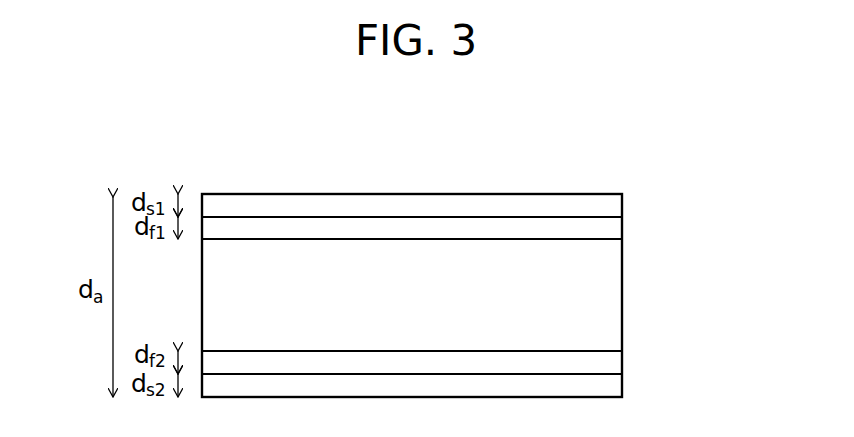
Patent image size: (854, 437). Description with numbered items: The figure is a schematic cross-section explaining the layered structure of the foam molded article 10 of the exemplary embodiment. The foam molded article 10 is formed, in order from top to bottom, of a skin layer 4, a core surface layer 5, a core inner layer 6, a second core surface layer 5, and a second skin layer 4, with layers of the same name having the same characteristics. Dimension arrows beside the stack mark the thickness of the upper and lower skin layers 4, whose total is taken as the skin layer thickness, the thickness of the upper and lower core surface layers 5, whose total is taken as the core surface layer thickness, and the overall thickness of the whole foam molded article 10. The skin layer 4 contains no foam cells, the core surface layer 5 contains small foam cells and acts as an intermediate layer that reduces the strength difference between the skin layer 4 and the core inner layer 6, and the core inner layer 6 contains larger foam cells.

The foam molded article 10 is at (553, 142).
The skin layer 4 is at (602, 206).
The core surface layer 5 is at (602, 229).
The core inner layer 6 is at (602, 275).